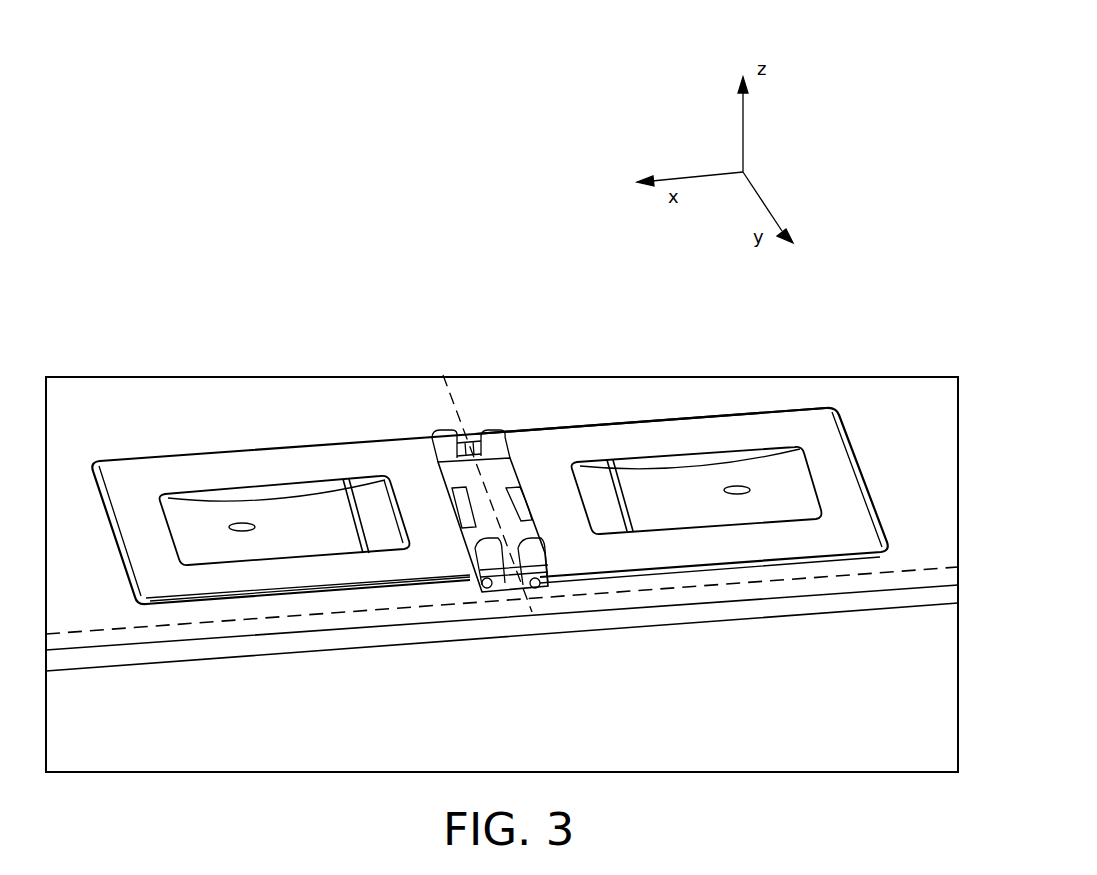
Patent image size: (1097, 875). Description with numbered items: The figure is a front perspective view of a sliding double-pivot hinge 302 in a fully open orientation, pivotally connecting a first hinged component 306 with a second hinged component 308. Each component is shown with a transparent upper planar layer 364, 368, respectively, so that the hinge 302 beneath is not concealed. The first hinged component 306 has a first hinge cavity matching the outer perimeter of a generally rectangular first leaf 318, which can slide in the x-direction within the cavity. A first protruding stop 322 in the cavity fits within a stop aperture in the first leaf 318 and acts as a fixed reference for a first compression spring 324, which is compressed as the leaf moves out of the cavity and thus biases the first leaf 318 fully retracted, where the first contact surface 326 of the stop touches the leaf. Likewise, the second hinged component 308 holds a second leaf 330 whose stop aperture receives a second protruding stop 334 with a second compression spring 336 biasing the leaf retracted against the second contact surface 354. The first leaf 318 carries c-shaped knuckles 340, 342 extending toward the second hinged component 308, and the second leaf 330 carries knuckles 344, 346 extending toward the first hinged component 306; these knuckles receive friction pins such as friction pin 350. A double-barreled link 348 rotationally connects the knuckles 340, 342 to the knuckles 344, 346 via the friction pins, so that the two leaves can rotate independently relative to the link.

The sliding double-pivot hinge 302 is at (414, 226).
The first hinged component 306 is at (922, 442).
The second hinged component 308 is at (150, 433).
The first leaf 318 is at (762, 432).
The first protruding stop 322 is at (593, 497).
The first compression spring 324 is at (706, 509).
The first contact surface 326 is at (581, 465).
The second leaf 330 is at (203, 582).
The second protruding stop 334 is at (375, 528).
The second compression spring 336 is at (328, 537).
The knuckle 340 is at (545, 568).
The knuckle 342 is at (502, 448).
The knuckle 344 is at (498, 578).
The knuckle 346 is at (452, 445).
The double-barreled link 348 is at (488, 525).
The friction pin 350 is at (522, 578).
The second contact surface 354 is at (399, 500).
The transparent upper planar layer 364 is at (747, 590).
The transparent upper planar layer 368 is at (130, 638).